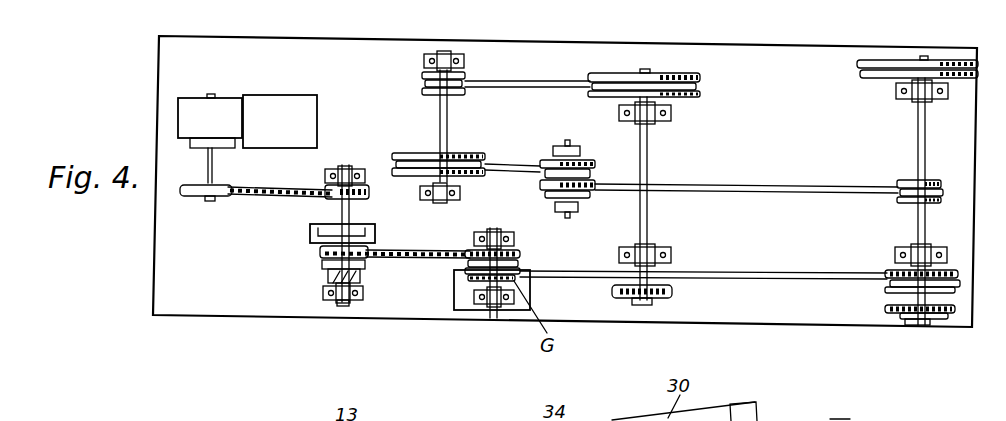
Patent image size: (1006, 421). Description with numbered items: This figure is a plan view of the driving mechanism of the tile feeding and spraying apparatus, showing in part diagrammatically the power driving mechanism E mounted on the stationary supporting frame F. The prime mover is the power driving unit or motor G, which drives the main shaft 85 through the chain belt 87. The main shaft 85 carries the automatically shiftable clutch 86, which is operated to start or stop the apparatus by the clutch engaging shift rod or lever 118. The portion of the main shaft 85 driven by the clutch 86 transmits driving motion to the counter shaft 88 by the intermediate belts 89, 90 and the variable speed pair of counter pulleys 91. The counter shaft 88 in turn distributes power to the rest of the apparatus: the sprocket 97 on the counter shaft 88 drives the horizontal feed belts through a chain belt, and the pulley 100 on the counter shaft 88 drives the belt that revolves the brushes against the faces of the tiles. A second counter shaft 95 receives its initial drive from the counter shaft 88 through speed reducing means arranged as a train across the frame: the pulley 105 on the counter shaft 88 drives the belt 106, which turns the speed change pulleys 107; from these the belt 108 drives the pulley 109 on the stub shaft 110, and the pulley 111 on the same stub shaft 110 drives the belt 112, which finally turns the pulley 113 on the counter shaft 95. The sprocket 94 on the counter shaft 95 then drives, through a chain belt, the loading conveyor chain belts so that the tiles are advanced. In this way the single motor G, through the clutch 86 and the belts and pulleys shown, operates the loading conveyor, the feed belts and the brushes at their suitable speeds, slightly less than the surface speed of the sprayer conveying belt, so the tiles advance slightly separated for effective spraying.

The main shaft 85 is at (353, 208).
The automatically shiftable clutch 86 is at (310, 238).
The chain belt 87 is at (282, 189).
The counter shaft 88 is at (925, 226).
The intermediate belt 89 is at (778, 271).
The intermediate belt 90 is at (422, 249).
The variable speed pair of counter pulleys 91 is at (521, 251).
The sprocket 94 is at (675, 292).
The counter shaft 95 is at (648, 220).
The sprocket 97 is at (945, 319).
The pulley 100 is at (872, 79).
The pulley 105 is at (905, 180).
The belt 106 is at (797, 178).
The speed change pulleys 107 is at (592, 160).
The belt 108 is at (515, 164).
The pulley 109 is at (466, 158).
The stub shaft 110 is at (440, 124).
The pulley 111 is at (463, 93).
The belt 112 is at (536, 77).
The pulley 113 is at (697, 98).
The clutch engaging shift rod or lever 118 is at (330, 276).
The power driving mechanism E is at (578, 268).
The stationary supporting frame F is at (777, 325).
The power driving unit G is at (247, 147).